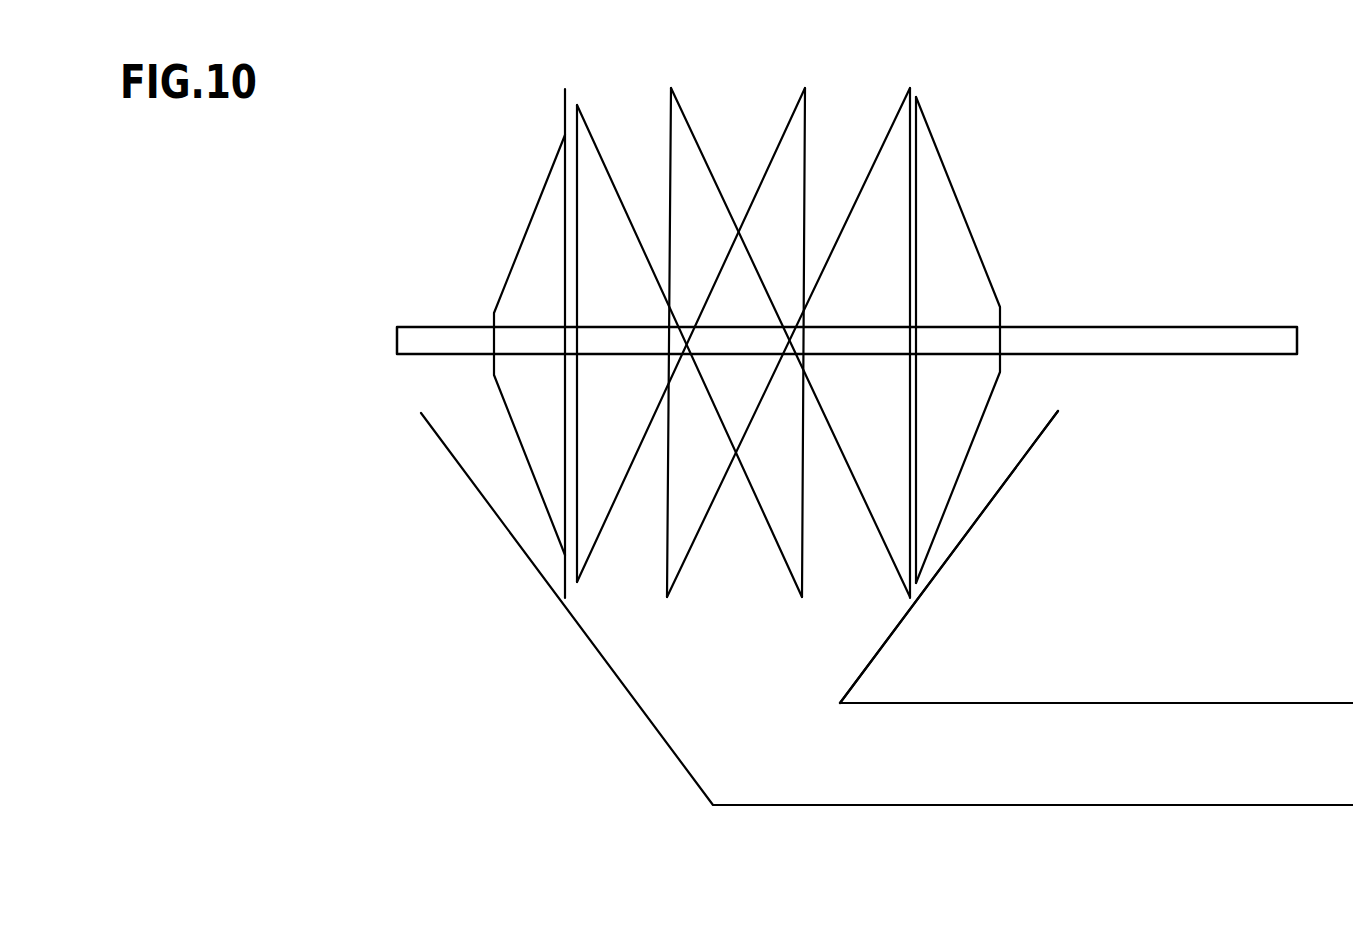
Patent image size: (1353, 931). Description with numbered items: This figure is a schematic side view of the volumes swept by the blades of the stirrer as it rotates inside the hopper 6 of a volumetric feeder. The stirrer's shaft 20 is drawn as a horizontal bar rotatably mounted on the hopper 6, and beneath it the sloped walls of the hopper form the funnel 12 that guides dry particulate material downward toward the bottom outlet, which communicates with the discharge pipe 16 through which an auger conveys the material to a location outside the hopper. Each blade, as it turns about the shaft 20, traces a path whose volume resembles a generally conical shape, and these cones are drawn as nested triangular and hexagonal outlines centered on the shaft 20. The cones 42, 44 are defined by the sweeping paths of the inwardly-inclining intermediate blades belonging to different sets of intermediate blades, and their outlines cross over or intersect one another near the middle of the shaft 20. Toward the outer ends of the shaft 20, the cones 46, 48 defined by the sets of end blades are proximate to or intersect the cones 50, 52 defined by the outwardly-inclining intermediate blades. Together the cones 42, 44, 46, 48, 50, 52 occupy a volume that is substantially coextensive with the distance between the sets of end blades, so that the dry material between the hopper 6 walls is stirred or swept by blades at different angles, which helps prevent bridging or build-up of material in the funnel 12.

The hopper 6 is at (1027, 501).
The funnel 12 is at (921, 631).
The discharge pipe 16 is at (1178, 702).
The shaft 20 is at (853, 343).
The cone 42 is at (685, 140).
The cone 44 is at (788, 152).
The cone 46 is at (550, 223).
The cone 48 is at (943, 213).
The cone 50 is at (595, 177).
The cone 52 is at (892, 152).